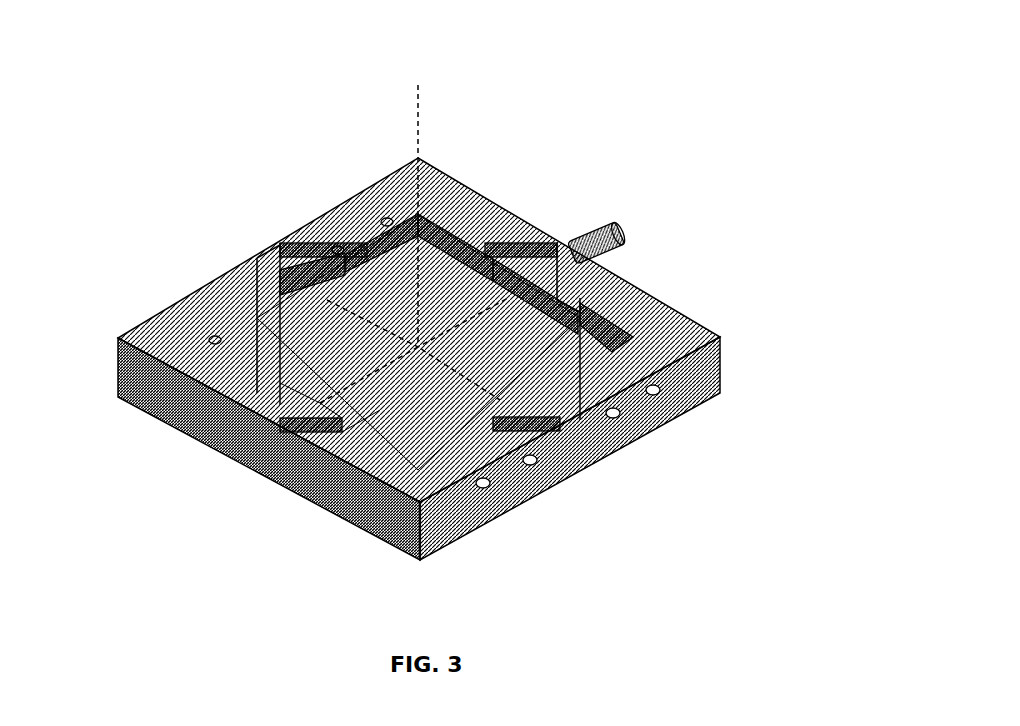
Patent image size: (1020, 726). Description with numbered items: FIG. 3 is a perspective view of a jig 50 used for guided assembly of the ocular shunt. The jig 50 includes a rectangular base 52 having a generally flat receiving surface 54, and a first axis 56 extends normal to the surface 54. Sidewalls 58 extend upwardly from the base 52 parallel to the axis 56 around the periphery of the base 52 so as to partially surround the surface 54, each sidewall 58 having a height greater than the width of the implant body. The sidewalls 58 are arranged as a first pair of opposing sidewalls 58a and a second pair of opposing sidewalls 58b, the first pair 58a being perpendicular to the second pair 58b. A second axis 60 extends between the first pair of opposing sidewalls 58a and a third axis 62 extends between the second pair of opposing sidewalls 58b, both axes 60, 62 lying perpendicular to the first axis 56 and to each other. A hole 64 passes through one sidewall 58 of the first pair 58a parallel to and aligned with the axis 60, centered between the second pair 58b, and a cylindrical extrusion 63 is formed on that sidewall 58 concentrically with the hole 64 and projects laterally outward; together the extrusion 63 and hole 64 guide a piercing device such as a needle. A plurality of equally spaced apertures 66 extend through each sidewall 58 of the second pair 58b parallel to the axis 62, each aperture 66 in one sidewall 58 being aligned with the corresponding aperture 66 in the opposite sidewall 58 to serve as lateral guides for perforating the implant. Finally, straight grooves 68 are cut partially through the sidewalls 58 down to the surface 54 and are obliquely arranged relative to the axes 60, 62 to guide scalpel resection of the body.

The jig 50 is at (200, 148).
The base 52 is at (283, 357).
The receiving surface 54 is at (442, 307).
The first axis 56 is at (418, 150).
The sidewalls 58 is at (607, 283).
The first pair of opposing sidewalls 58a is at (507, 240).
The second pair of opposing sidewalls 58b is at (220, 315).
The second axis 60 is at (347, 390).
The third axis 62 is at (583, 467).
The cylindrical extrusion 63 is at (607, 237).
The hole 64 is at (527, 283).
The apertures 66 is at (387, 222).
The grooves 68 is at (257, 282).